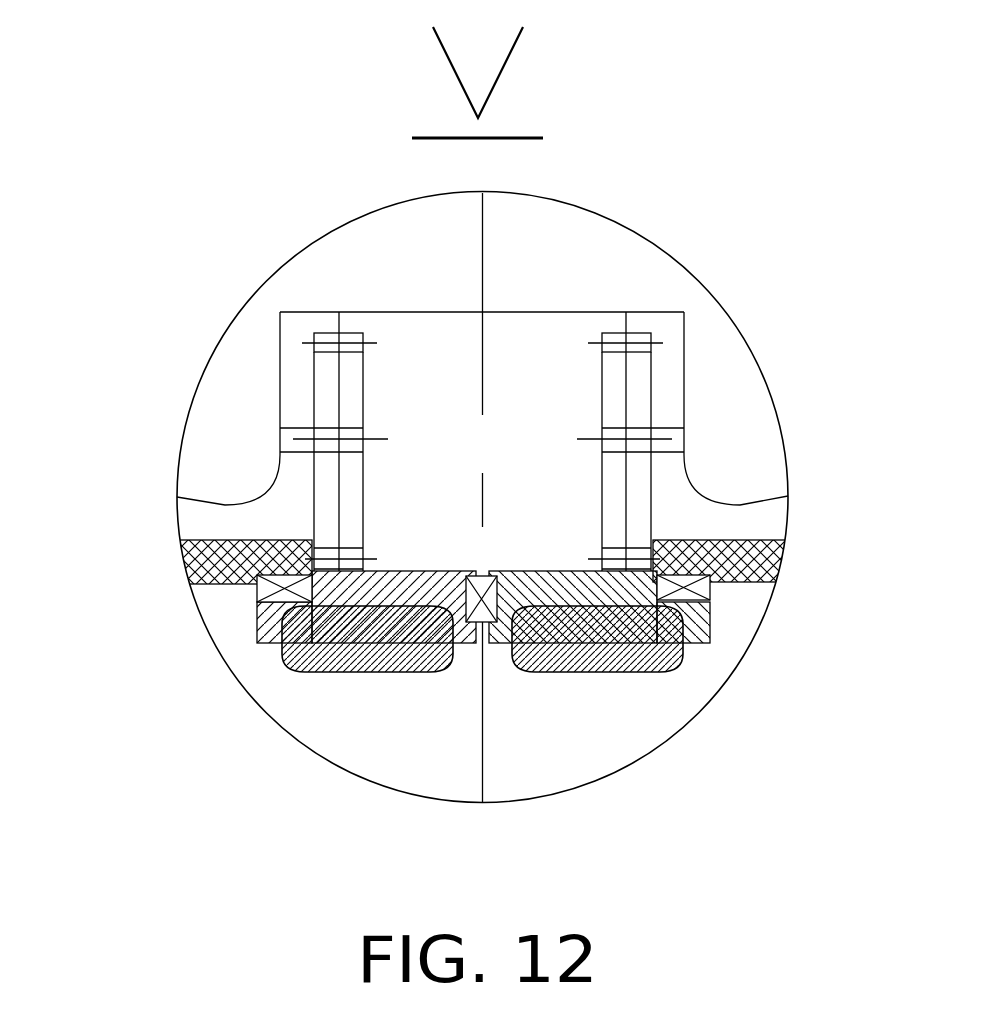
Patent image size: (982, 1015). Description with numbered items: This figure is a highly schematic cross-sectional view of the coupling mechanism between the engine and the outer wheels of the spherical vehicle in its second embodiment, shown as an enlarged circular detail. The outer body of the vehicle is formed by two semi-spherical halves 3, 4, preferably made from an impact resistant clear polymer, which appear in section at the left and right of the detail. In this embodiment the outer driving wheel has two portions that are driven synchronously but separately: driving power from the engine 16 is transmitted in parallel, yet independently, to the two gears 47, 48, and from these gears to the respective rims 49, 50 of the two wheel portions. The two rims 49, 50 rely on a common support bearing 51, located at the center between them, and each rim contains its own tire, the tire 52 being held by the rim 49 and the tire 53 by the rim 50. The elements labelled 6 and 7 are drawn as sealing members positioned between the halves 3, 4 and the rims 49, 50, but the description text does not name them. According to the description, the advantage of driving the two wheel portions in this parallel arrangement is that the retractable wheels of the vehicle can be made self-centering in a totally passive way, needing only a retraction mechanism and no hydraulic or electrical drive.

The engine 16 is at (482, 363).
The gear 48 is at (342, 405).
The gear 47 is at (645, 408).
The semi-spherical half 4 is at (190, 565).
The semi-spherical half 3 is at (733, 565).
The left seal 7 is at (257, 593).
The right seal 6 is at (710, 592).
The rim 50 is at (262, 630).
The rim 49 is at (708, 622).
The common support bearing 51 is at (482, 600).
The tire 53 is at (367, 648).
The tire 52 is at (615, 643).